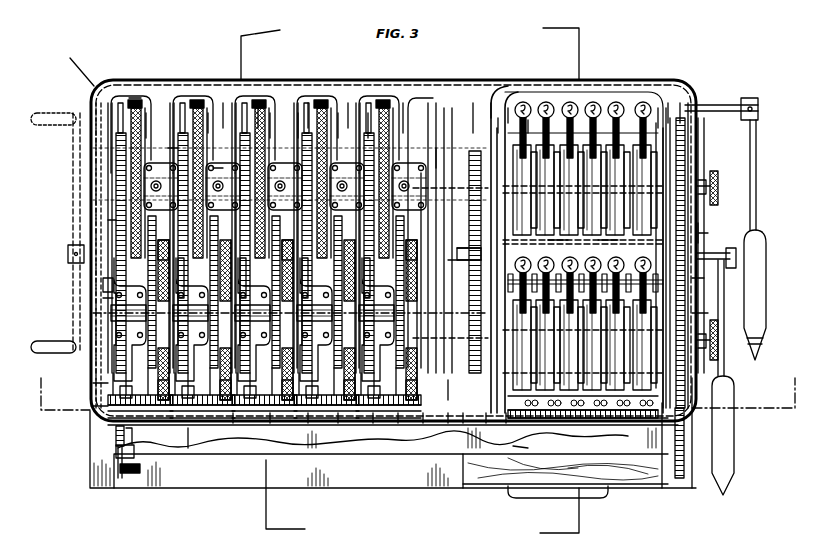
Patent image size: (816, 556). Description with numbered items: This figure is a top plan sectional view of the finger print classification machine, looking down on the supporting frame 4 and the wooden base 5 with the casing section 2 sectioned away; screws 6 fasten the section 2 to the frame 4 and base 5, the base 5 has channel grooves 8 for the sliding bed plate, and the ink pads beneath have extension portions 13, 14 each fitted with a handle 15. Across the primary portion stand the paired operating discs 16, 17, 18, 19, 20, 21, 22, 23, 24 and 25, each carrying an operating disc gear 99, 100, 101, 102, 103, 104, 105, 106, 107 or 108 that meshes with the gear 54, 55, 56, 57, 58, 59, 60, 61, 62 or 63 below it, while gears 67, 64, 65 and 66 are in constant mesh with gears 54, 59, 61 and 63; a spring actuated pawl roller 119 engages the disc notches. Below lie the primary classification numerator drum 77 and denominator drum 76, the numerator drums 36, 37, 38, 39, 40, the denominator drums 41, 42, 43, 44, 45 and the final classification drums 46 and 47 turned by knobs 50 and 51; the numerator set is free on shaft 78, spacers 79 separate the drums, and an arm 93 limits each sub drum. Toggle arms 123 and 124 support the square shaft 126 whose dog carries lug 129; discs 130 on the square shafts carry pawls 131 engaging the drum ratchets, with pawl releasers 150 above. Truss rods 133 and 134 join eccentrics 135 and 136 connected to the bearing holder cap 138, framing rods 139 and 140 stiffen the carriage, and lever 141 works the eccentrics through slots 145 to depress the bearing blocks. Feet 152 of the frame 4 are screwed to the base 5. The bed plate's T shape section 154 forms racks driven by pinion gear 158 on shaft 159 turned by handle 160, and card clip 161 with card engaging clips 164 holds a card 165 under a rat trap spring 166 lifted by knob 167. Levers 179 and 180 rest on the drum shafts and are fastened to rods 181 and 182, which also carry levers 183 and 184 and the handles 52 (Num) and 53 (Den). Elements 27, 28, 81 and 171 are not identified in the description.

The casing section 2 is at (108, 70).
The supporting frame 4 is at (415, 229).
The base 5 is at (238, 500).
The screws 6 is at (279, 284).
The channel grooves 8 is at (110, 470).
The extension portion 13 is at (633, 470).
The extension portion 14 is at (456, 410).
The handle 15 is at (598, 95).
The operating disc 16 is at (140, 112).
The operating disc 17 is at (205, 110).
The operating disc 18 is at (268, 110).
The operating disc 19 is at (333, 110).
The operating disc 20 is at (362, 110).
The operating disc 21 is at (182, 420).
The operating disc 22 is at (228, 410).
The operating disc 23 is at (302, 410).
The operating disc 24 is at (366, 410).
The operating disc 25 is at (416, 410).
The shaft 27 is at (235, 105).
The shaft 28 is at (292, 110).
The numerator drum 36 is at (518, 92).
The numerator drum 37 is at (541, 92).
The numerator drum 38 is at (564, 92).
The numerator drum 39 is at (588, 92).
The numerator drum 40 is at (612, 92).
The denominator drum 41 is at (517, 385).
The denominator drum 42 is at (541, 385).
The denominator drum 43 is at (563, 385).
The denominator drum 44 is at (586, 385).
The denominator drum 45 is at (609, 385).
The final classification numerator drum 46 is at (652, 105).
The final classification denominator drum 47 is at (636, 385).
The knob 50 is at (710, 178).
The knob 51 is at (705, 300).
The handle 52 is at (757, 196).
The handle 53 is at (726, 430).
The gear 54 is at (108, 238).
The gear 55 is at (190, 278).
The gear 56 is at (252, 278).
The gear 57 is at (315, 278).
The gear 58 is at (378, 278).
The gear 59 is at (151, 388).
The gear 60 is at (215, 388).
The gear 61 is at (276, 388).
The gear 62 is at (338, 388).
The gear 63 is at (391, 410).
The gear 64 is at (162, 239).
The gear 65 is at (287, 239).
The gear 66 is at (410, 239).
The gear 67 is at (100, 360).
The primary classification denominator drum 76 is at (499, 410).
The primary classification numerator drum 77 is at (485, 95).
The shaft 78 is at (400, 100).
The spacers 79 is at (605, 234).
The bracket 81 is at (523, 453).
The arm 93 is at (603, 480).
The operating disc gear 99 is at (112, 118).
The operating disc gear 100 is at (110, 330).
The operating disc gear 101 is at (170, 140).
The operating disc gear 102 is at (184, 430).
The operating disc gear 103 is at (255, 100).
The operating disc gear 104 is at (263, 410).
The operating disc gear 105 is at (305, 100).
The operating disc gear 106 is at (331, 410).
The operating disc gear 107 is at (345, 100).
The operating disc gear 108 is at (398, 390).
The spring actuated pawl roller 119 is at (128, 88).
The toggle arm 123 is at (680, 124).
The toggle arm 124 is at (452, 250).
The square shaft 126 is at (664, 100).
The upstanding lug 129 is at (676, 100).
The disc 130 is at (492, 112).
The pawl 131 is at (503, 100).
The truss rod 133 is at (660, 405).
The truss rod 134 is at (441, 410).
The eccentric 135 is at (695, 325).
The eccentric 136 is at (660, 170).
The bearing holder cap 138 is at (467, 95).
The framing rod 139 is at (479, 410).
The framing rod 140 is at (636, 92).
The lever 141 is at (560, 234).
The slots 145 is at (443, 388).
The pawl releaser 150 is at (522, 112).
The feet 152 is at (678, 137).
The T shape section 154 is at (700, 222).
The pinion gear 158 is at (105, 260).
The shaft 159 is at (60, 246).
The handle 160 is at (48, 90).
The card clip 161 is at (130, 426).
The card engaging clips 164 is at (103, 282).
The card 165 is at (236, 448).
The rat trap spring 166 is at (108, 430).
The knob 167 is at (120, 466).
The arm 171 is at (210, 162).
The lever 179 is at (700, 160).
The lever 180 is at (700, 276).
The rod 181 is at (712, 97).
The rod 182 is at (705, 246).
The lever 183 is at (432, 145).
The lever 184 is at (452, 240).